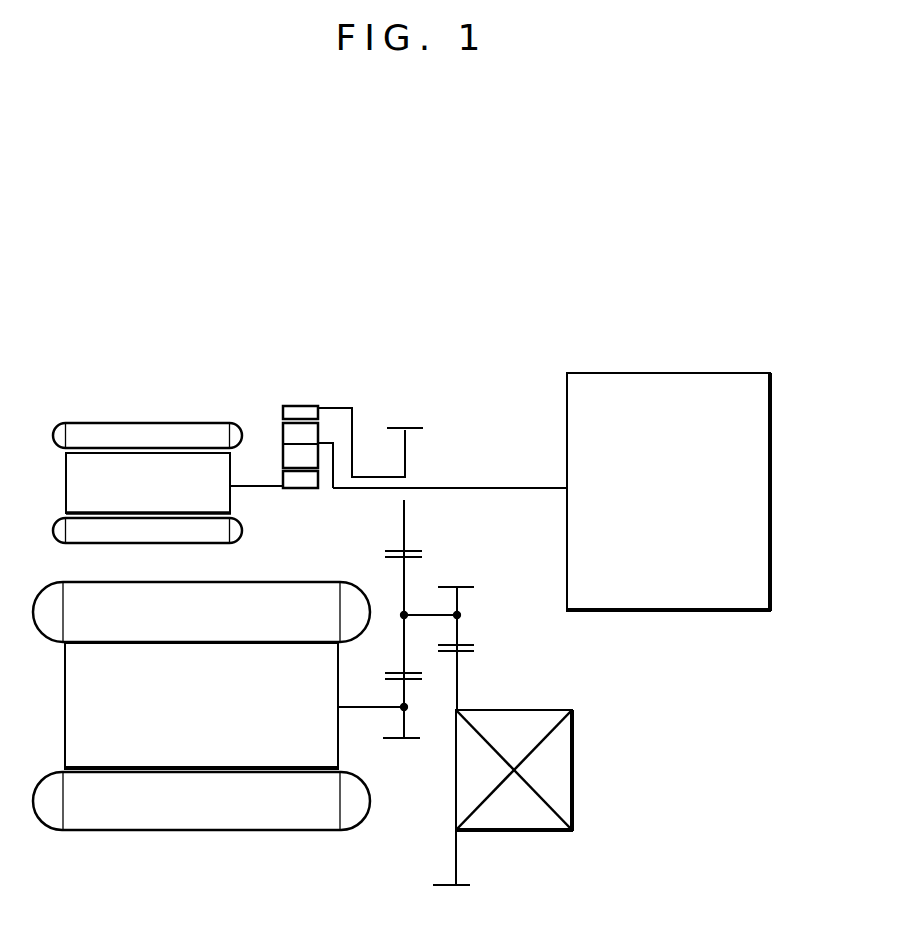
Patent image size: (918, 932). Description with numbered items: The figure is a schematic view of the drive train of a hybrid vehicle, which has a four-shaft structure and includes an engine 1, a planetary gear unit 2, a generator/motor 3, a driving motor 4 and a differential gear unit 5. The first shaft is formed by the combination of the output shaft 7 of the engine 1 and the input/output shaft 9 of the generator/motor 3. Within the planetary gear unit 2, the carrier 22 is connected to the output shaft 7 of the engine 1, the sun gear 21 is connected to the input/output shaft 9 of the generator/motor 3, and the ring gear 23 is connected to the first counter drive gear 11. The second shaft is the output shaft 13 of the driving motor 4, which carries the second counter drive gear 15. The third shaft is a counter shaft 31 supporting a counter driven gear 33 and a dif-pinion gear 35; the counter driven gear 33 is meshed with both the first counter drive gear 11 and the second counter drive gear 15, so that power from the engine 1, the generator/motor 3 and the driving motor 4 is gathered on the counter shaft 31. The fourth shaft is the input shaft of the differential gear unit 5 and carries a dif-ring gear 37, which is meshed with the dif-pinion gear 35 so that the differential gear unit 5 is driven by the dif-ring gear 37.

The engine 1 is at (660, 612).
The planetary gear unit 2 is at (311, 428).
The generator/motor 3 is at (125, 417).
The driving motor 4 is at (145, 840).
The differential gear unit 5 is at (573, 765).
The output shaft 7 is at (448, 488).
The input/output shaft 9 is at (258, 487).
The first counter drive gear 11 is at (414, 428).
The output shaft 13 is at (373, 708).
The second counter drive gear 15 is at (410, 745).
The sun gear 21 is at (318, 484).
The carrier 22 is at (283, 432).
The ring gear 23 is at (283, 409).
The counter shaft 31 is at (408, 612).
The counter driven gear 33 is at (392, 556).
The dif-pinion gear 35 is at (463, 590).
The dif-ring gear 37 is at (463, 654).